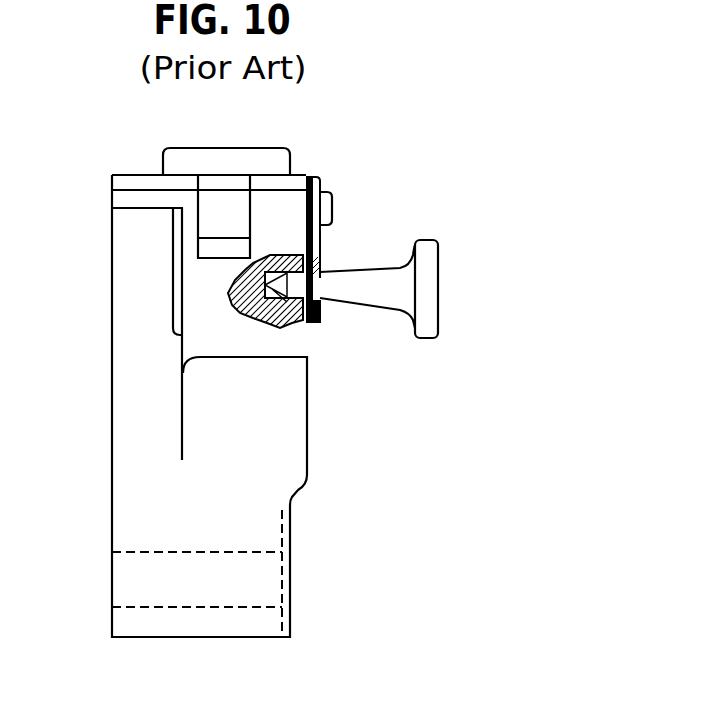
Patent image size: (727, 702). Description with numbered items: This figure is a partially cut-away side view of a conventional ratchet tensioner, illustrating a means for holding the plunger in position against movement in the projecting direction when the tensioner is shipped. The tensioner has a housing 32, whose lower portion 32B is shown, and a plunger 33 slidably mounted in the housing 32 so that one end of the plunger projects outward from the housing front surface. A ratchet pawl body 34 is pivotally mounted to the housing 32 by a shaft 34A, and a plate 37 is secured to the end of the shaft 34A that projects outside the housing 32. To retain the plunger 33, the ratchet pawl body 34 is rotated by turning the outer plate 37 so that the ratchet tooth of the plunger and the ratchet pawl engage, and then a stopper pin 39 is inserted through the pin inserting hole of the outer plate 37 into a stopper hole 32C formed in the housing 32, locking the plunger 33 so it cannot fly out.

The housing 32 is at (150, 422).
The lower housing portion 32B is at (133, 577).
The stopper hole 32C is at (283, 325).
The plunger 33 is at (268, 160).
The ratchet pawl body 34 is at (220, 213).
The shaft 34A is at (332, 217).
The plate 37 is at (325, 182).
The stopper pin 39 is at (432, 297).